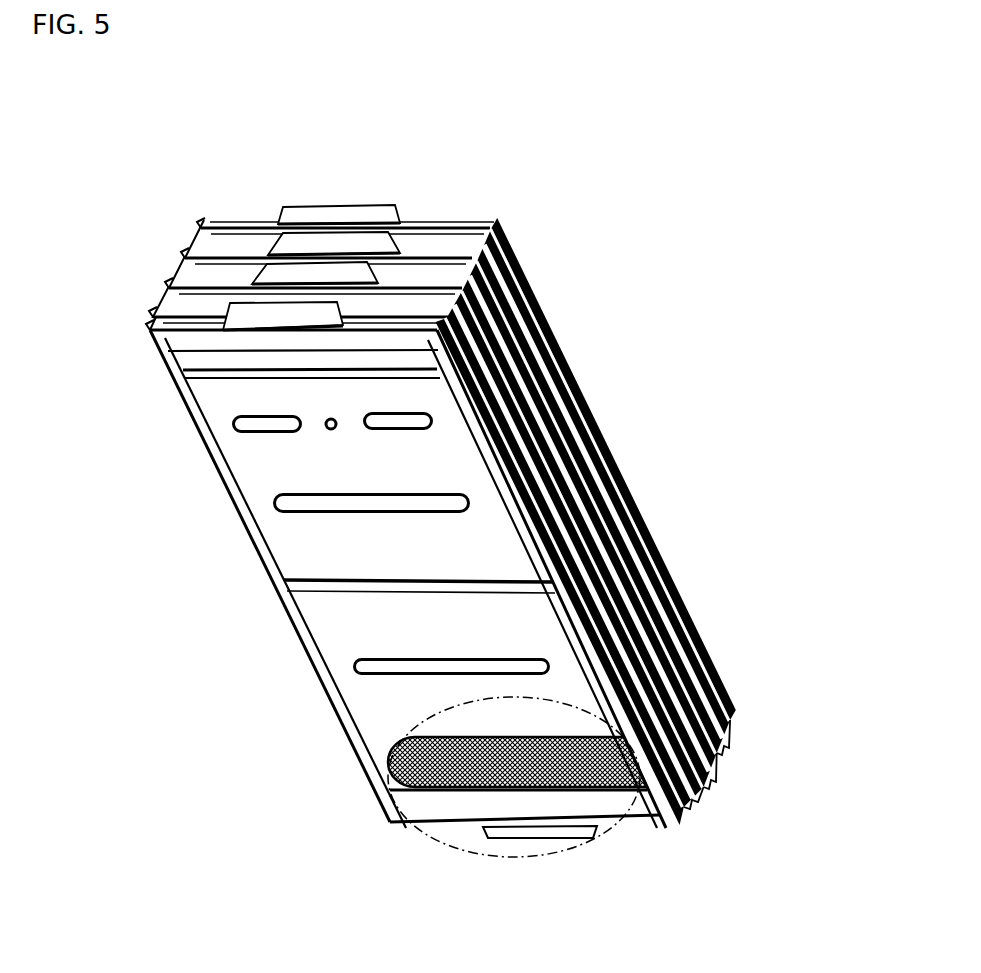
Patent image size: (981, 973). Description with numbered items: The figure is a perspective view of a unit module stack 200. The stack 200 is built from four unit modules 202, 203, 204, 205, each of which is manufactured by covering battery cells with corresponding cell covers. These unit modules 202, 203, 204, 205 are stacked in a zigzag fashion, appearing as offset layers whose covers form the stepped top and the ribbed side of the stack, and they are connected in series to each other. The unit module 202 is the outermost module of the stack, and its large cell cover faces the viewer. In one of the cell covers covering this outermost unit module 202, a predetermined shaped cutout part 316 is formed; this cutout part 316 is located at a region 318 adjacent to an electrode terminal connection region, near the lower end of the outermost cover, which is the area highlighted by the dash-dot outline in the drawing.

The unit module stack 200 is at (99, 114).
The unit module 202 is at (333, 648).
The unit module 203 is at (703, 767).
The unit module 204 is at (657, 592).
The unit module 205 is at (601, 430).
The cutout part 316 is at (380, 752).
The region 318 is at (592, 848).